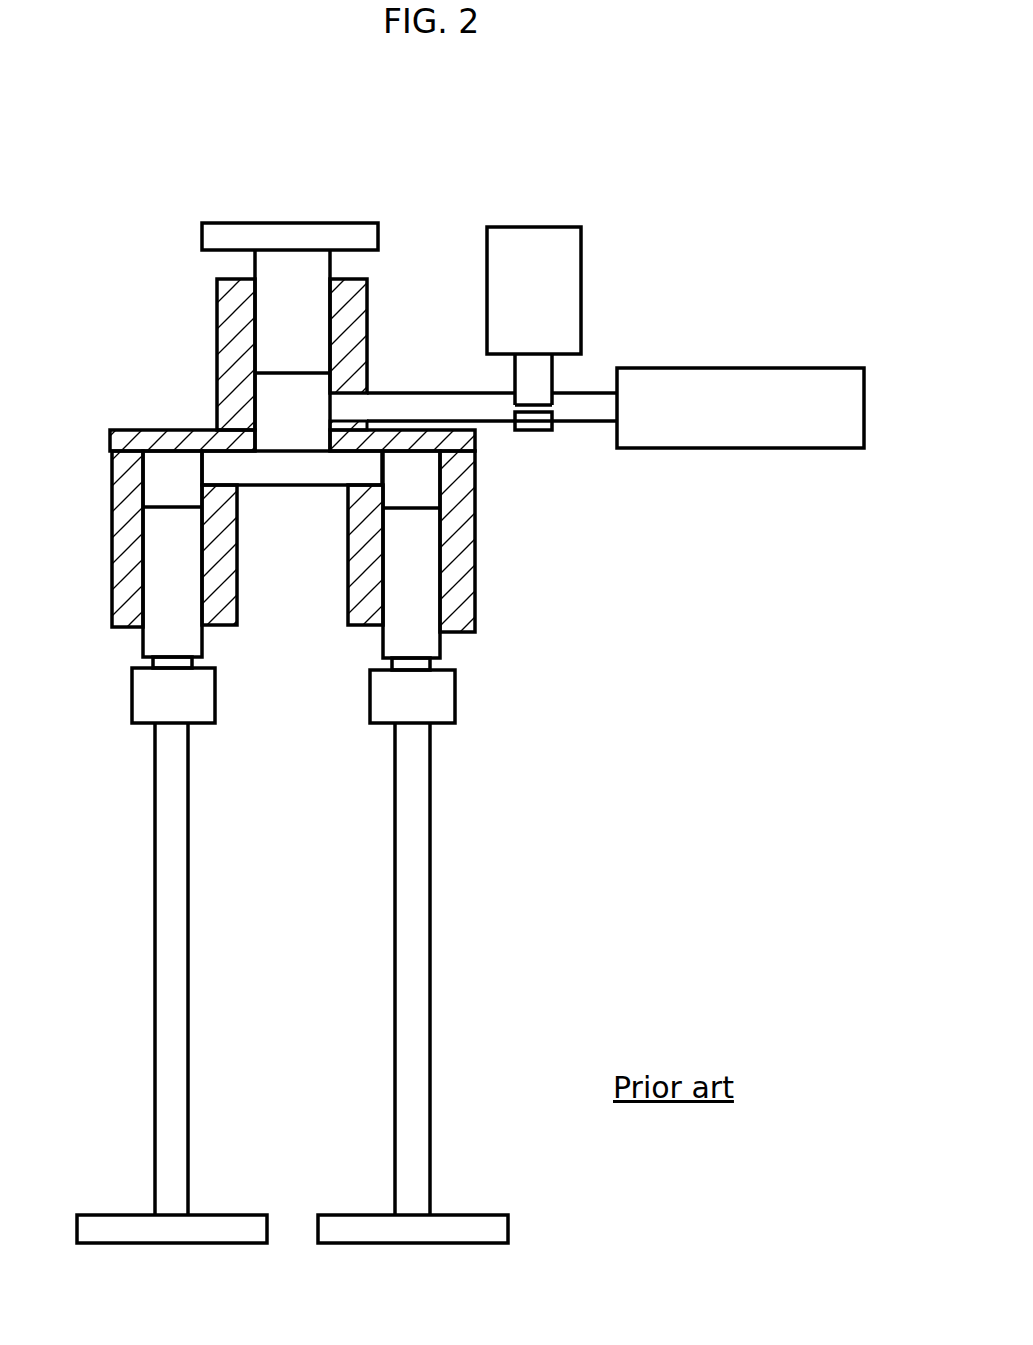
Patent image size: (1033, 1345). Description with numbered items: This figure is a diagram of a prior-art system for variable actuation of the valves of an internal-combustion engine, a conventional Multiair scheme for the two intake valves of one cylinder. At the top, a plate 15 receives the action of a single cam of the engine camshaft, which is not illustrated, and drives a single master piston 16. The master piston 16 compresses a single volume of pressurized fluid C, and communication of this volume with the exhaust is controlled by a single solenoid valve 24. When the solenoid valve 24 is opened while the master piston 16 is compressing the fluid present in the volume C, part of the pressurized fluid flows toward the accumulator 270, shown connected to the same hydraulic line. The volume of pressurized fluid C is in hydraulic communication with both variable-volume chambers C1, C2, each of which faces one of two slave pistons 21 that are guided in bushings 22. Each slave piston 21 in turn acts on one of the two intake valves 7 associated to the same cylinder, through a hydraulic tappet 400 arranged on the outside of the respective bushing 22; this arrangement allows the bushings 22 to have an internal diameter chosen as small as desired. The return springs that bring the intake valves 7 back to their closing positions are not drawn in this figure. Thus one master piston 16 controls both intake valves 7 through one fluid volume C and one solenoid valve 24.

The plate 15 is at (310, 232).
The master piston 16 is at (280, 282).
The solenoid valve 24 is at (530, 250).
The accumulator 270 is at (787, 380).
The volume of pressurized fluid C is at (293, 408).
The variable-volume chamber C1 is at (157, 480).
The variable-volume chamber C2 is at (420, 480).
The bushing 22 is at (113, 590).
The slave piston 21 is at (170, 617).
The hydraulic tappet 400 is at (148, 707).
The intake valve 7 is at (153, 953).